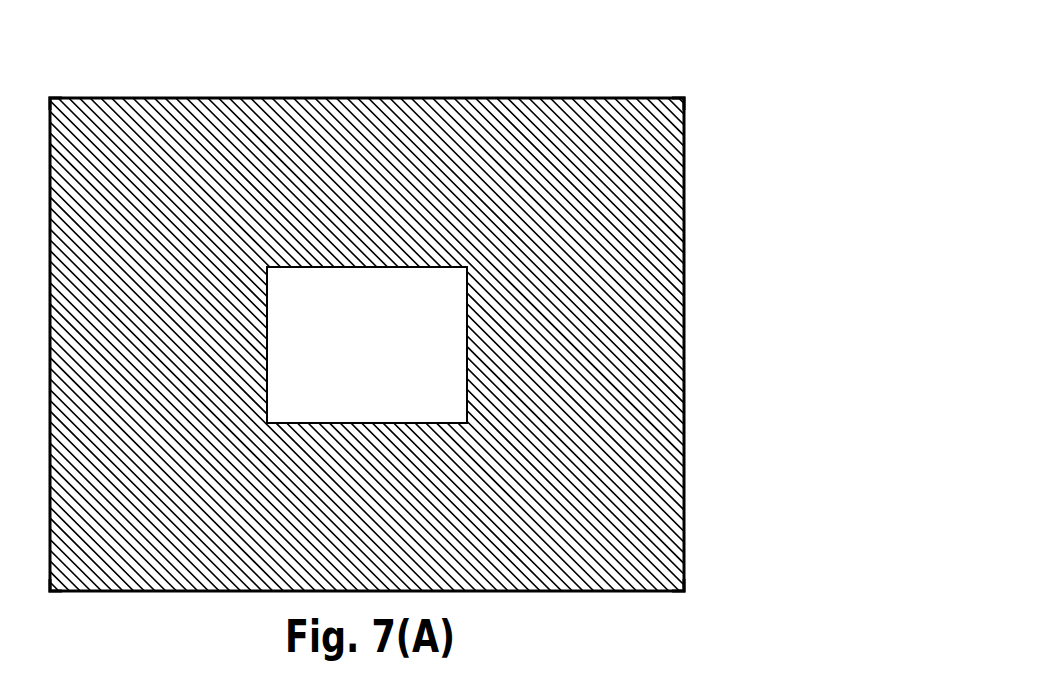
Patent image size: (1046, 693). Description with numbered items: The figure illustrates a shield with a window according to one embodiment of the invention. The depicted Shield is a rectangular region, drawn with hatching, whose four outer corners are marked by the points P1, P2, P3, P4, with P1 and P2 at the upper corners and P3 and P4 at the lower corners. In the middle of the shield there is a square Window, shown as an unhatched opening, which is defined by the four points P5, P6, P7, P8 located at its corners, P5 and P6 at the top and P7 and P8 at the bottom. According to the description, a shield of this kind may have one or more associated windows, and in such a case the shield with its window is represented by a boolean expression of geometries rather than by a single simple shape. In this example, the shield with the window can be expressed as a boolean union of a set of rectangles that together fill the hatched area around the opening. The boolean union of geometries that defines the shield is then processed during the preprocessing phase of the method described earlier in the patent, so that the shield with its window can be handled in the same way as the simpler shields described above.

The shield Shield is at (396, 125).
The window Window is at (340, 362).
The shield corner point P1 is at (35, 102).
The shield corner point P2 is at (701, 102).
The shield corner point P3 is at (35, 589).
The shield corner point P4 is at (701, 589).
The point p5 P5 is at (289, 285).
The point p6 P6 is at (447, 285).
The point p7 P7 is at (289, 405).
The point p8 P8 is at (447, 405).